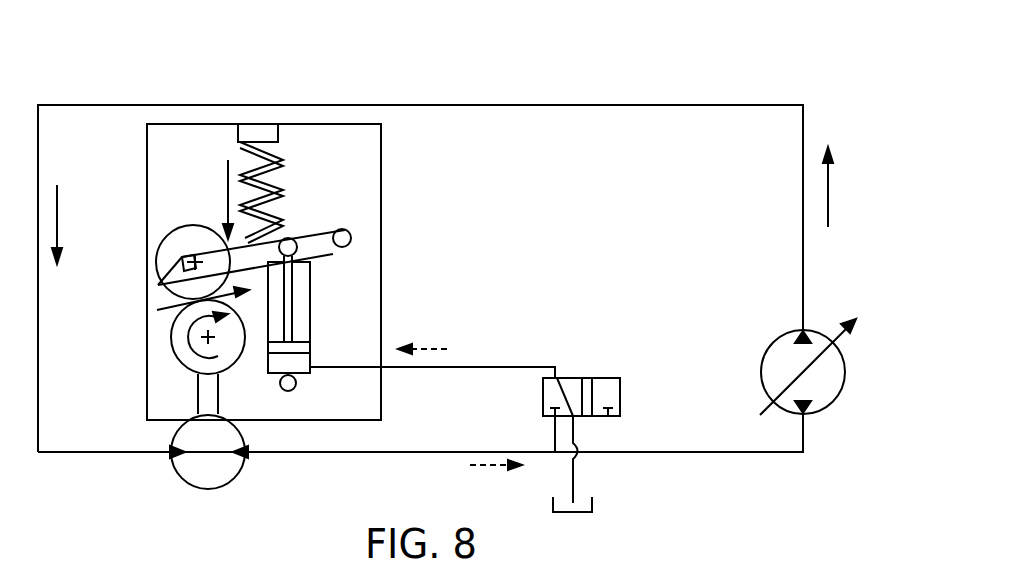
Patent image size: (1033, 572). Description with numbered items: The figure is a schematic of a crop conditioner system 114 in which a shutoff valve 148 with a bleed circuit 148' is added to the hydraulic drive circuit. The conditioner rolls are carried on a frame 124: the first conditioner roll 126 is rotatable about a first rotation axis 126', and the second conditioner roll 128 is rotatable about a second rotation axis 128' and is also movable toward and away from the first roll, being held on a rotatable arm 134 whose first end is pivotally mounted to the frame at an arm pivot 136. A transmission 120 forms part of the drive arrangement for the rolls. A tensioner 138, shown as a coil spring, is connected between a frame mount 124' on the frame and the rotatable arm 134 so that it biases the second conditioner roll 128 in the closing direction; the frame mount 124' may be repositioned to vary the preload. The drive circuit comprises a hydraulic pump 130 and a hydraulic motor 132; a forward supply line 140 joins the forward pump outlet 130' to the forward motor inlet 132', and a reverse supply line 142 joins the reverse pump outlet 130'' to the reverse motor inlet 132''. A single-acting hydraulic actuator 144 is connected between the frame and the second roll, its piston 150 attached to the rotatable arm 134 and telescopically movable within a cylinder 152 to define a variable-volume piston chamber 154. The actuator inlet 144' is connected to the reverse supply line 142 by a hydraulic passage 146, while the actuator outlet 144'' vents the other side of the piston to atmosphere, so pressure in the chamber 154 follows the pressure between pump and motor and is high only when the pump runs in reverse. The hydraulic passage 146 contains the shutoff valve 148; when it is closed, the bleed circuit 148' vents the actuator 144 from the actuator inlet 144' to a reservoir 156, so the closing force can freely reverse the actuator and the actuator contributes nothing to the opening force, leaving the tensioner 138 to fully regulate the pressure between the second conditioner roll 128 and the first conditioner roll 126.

The crop conditioner system 114 is at (662, 44).
The transmission 120 is at (196, 393).
The frame 124 is at (263, 240).
The frame mount 124' is at (256, 96).
The first conditioner roll 126 is at (166, 346).
The first rotation axis 126' is at (158, 335).
The second conditioner roll 128 is at (168, 258).
The second rotation axis 128' is at (145, 276).
The hydraulic pump 130 is at (800, 345).
The forward pump outlet 130' is at (825, 305).
The reverse pump outlet 130'' is at (827, 437).
The hydraulic motor 132 is at (182, 471).
The forward motor inlet 132' is at (137, 465).
The reverse motor inlet 132'' is at (287, 473).
The rotatable arm 134 is at (312, 236).
The arm pivot 136 is at (348, 230).
The tensioner 138 is at (280, 165).
The forward supply line 140 is at (423, 104).
The reverse supply line 142 is at (656, 452).
The hydraulic actuator 144 is at (356, 313).
The actuator inlet 144' is at (389, 344).
The actuator outlet 144'' is at (380, 283).
The hydraulic passage 146 is at (433, 367).
The shutoff valve 148 is at (613, 427).
The bleed circuit 148' is at (564, 361).
The piston 150 is at (310, 331).
The cylinder 152 is at (310, 318).
The variable-volume piston chamber 154 is at (296, 383).
The reservoir 156 is at (594, 508).